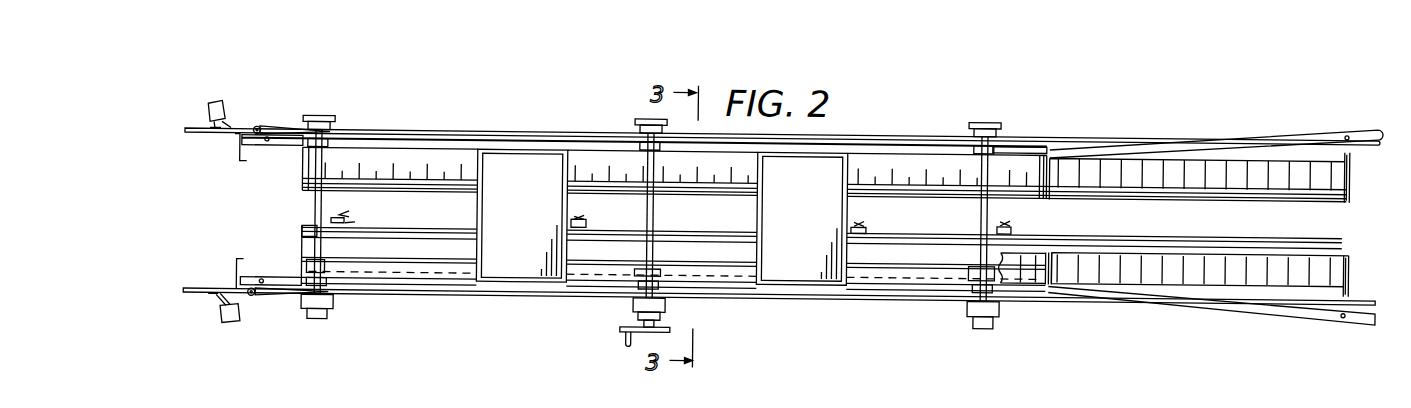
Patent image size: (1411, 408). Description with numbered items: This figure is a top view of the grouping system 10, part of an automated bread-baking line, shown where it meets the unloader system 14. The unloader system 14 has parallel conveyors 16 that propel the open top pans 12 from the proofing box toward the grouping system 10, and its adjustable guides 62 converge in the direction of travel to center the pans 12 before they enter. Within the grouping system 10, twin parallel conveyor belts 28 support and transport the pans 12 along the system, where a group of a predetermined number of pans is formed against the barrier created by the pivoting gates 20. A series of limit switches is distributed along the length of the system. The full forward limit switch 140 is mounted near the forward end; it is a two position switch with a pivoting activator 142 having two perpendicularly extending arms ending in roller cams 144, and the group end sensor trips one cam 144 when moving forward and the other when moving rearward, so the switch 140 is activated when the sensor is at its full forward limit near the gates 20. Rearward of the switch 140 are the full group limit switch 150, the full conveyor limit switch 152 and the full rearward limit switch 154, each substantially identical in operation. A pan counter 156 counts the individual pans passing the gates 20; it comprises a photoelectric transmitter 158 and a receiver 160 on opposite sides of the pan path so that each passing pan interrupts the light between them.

The grouping system 10 is at (547, 113).
The pans 12 is at (536, 215).
The unloader system 14 is at (1199, 196).
The parallel conveyors 16 is at (1218, 251).
The pivoting gates 20 is at (242, 161).
The twin parallel conveyor belts 28 is at (452, 165).
The adjustable guides 62 is at (1288, 126).
The full forward limit switch 140 is at (333, 216).
The pivoting activator 142 is at (350, 217).
The roller cams 144 is at (346, 210).
The full group limit switch 150 is at (590, 219).
The full conveyor limit switch 152 is at (868, 221).
The full rearward limit switch 154 is at (1014, 221).
The pan counter 156 is at (204, 327).
The photoelectric transmitter 158 is at (241, 320).
The receiver 160 is at (221, 103).